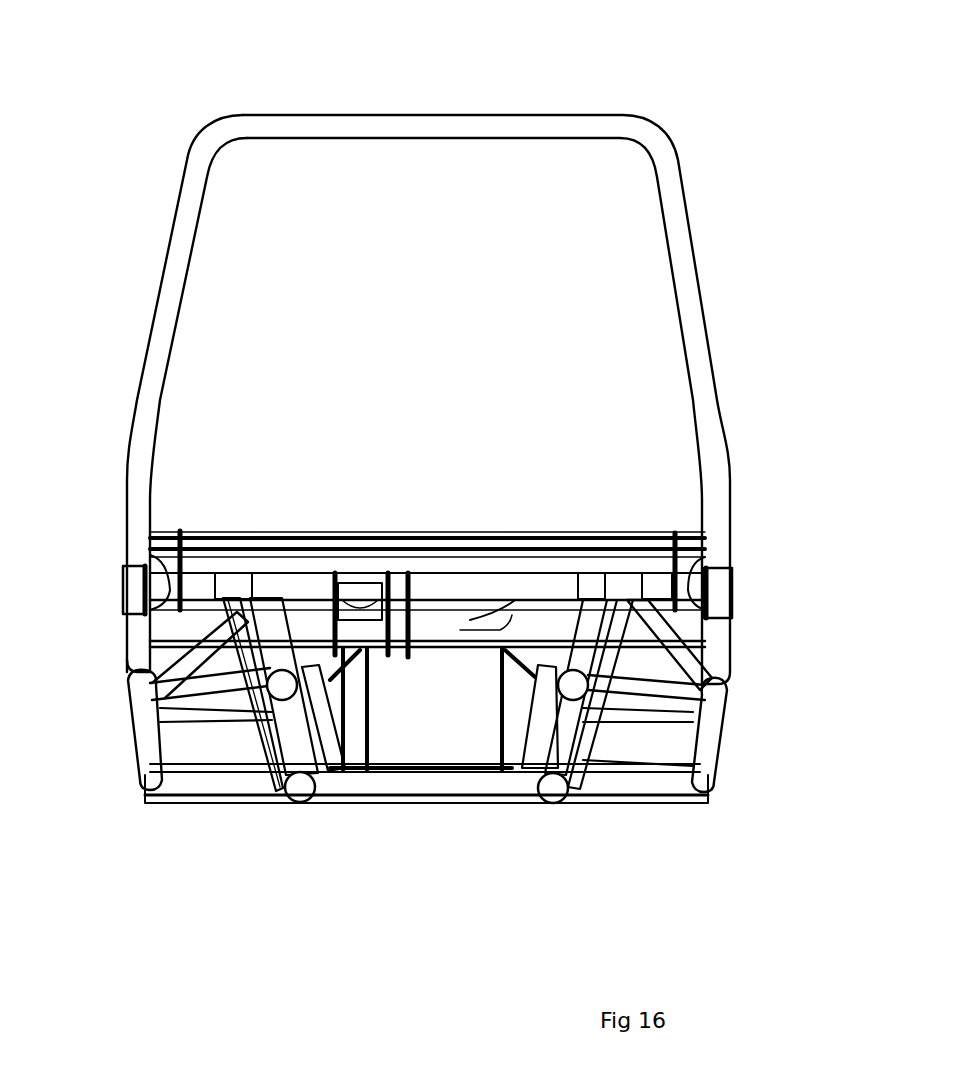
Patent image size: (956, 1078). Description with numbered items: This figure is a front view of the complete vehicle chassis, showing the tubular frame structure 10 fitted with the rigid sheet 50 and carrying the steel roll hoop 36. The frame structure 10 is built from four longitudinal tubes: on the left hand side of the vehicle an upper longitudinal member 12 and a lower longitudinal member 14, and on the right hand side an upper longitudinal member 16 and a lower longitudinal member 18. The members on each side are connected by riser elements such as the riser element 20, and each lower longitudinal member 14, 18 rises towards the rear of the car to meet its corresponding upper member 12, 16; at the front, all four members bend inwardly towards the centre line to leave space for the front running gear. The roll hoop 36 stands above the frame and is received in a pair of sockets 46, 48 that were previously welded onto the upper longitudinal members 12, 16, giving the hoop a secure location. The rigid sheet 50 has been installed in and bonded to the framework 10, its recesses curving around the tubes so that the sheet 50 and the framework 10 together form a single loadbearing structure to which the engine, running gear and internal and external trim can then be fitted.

The frame structure 10 is at (207, 134).
The roll hoop 36 is at (163, 299).
The rigid sheet 50 is at (470, 530).
The socket 48 is at (150, 592).
The socket 46 is at (734, 592).
The upper longitudinal member 16 is at (131, 622).
The upper longitudinal member 12 is at (734, 640).
The riser element 20 is at (700, 732).
The lower longitudinal member 18 is at (238, 782).
The lower longitudinal member 14 is at (655, 783).